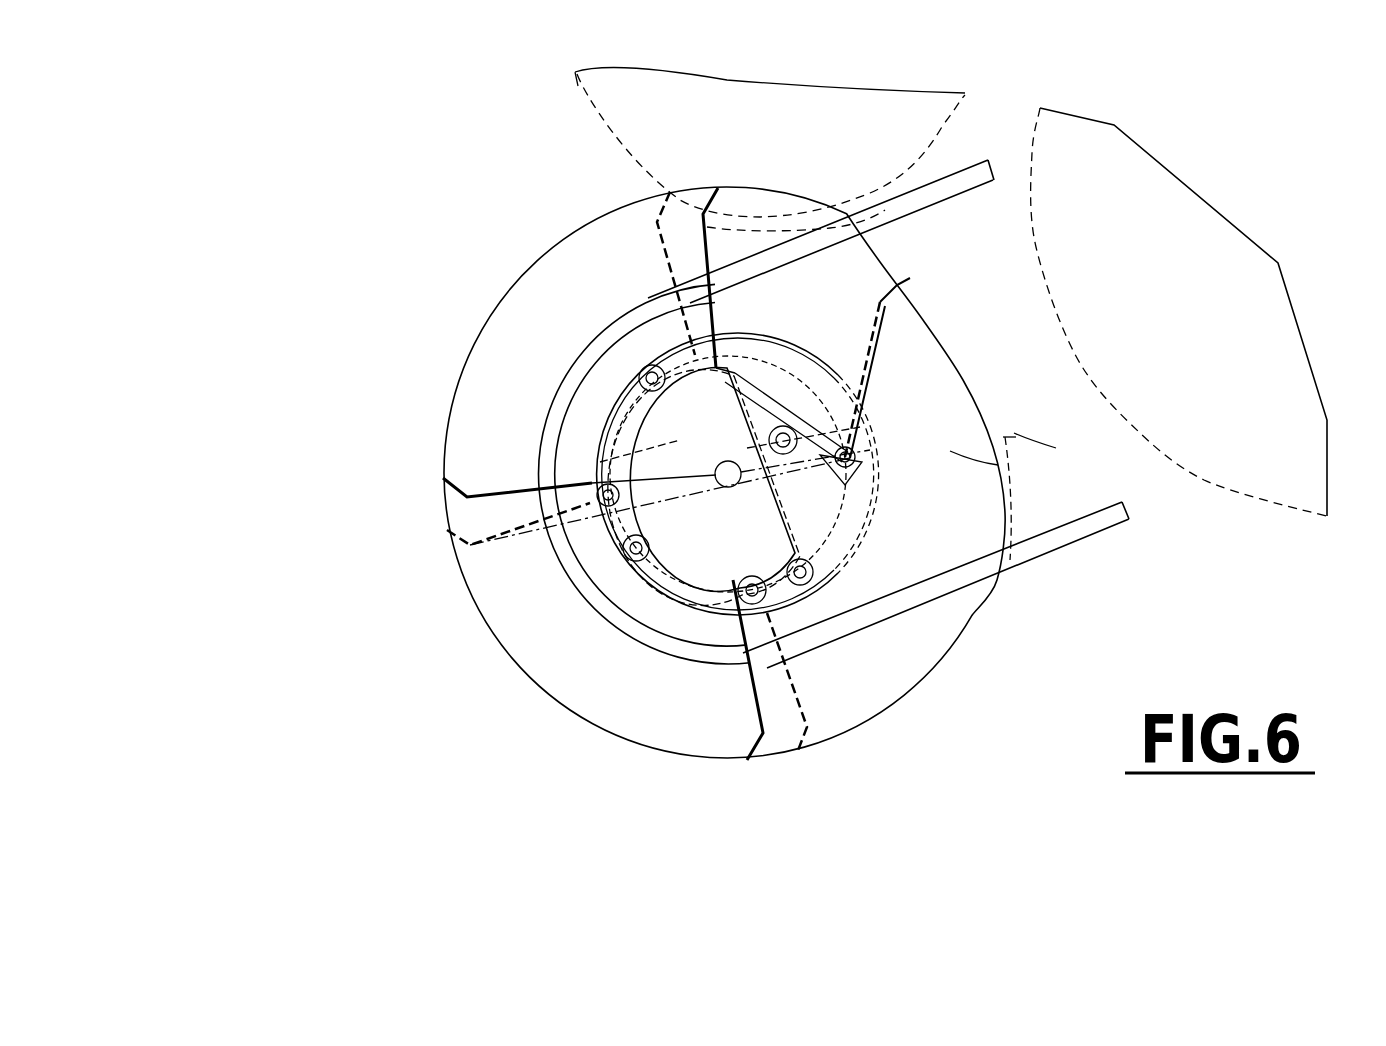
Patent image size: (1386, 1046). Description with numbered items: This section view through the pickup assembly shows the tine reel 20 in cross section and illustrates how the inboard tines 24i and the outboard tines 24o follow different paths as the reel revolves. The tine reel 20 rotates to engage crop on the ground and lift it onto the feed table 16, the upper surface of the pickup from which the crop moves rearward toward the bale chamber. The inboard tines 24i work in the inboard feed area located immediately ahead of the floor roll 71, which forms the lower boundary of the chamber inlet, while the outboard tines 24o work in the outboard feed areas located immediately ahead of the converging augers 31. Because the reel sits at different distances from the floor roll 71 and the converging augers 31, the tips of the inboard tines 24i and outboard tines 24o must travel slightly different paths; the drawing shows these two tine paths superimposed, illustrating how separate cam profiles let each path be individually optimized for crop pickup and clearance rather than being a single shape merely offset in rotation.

The tine reel 20 is at (395, 277).
The converging augers 31 is at (620, 103).
The feed table 16 is at (967, 167).
The floor roll 71 is at (1176, 247).
The inboard tines 24i is at (718, 188).
The outboard tines 24o is at (657, 240).